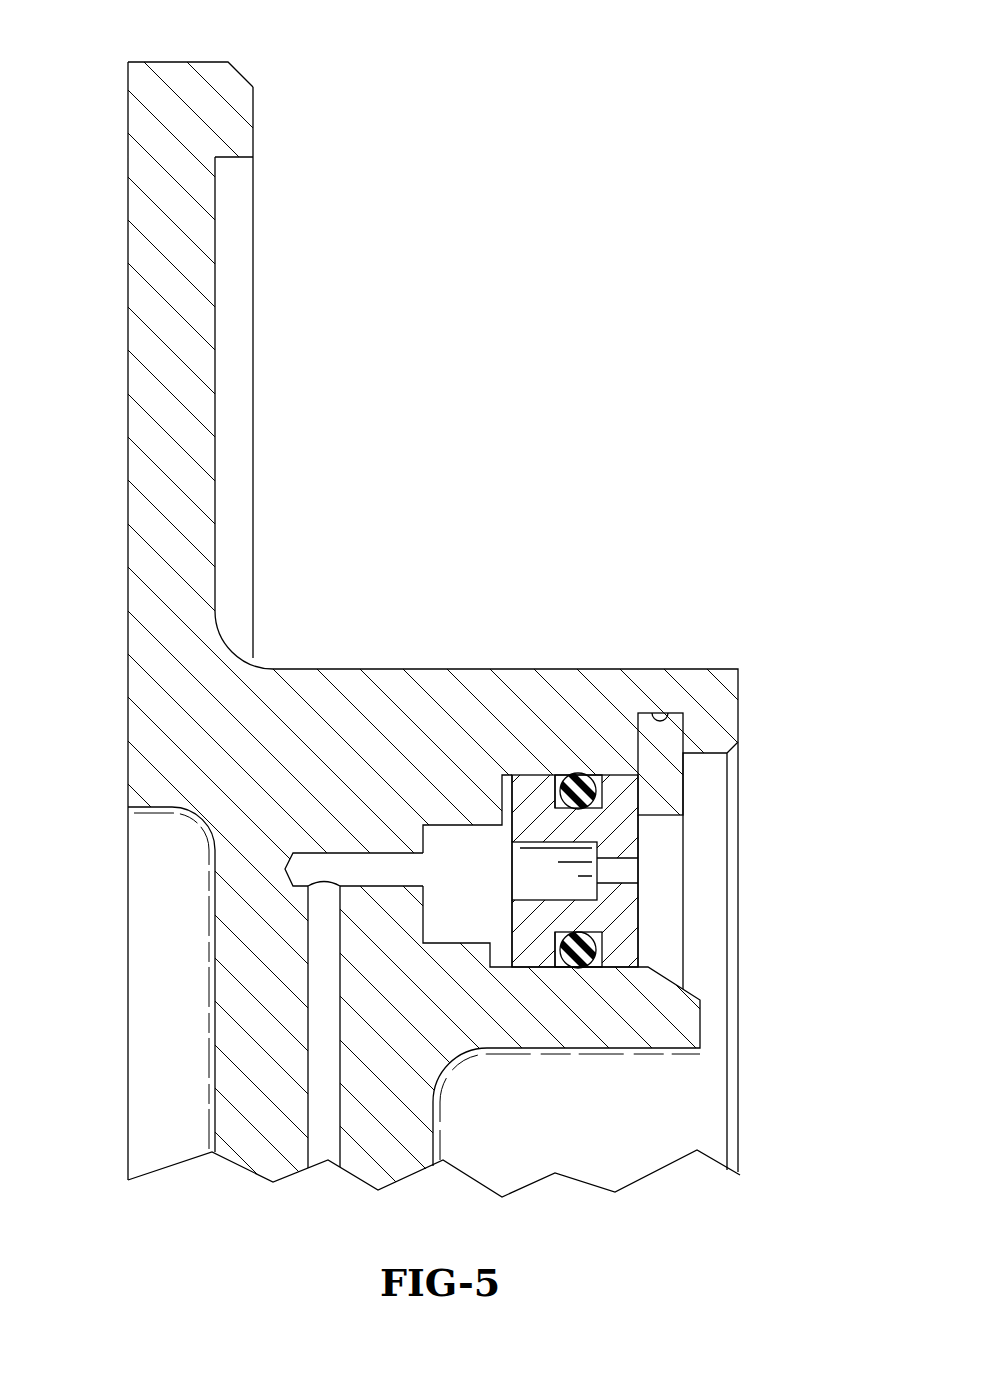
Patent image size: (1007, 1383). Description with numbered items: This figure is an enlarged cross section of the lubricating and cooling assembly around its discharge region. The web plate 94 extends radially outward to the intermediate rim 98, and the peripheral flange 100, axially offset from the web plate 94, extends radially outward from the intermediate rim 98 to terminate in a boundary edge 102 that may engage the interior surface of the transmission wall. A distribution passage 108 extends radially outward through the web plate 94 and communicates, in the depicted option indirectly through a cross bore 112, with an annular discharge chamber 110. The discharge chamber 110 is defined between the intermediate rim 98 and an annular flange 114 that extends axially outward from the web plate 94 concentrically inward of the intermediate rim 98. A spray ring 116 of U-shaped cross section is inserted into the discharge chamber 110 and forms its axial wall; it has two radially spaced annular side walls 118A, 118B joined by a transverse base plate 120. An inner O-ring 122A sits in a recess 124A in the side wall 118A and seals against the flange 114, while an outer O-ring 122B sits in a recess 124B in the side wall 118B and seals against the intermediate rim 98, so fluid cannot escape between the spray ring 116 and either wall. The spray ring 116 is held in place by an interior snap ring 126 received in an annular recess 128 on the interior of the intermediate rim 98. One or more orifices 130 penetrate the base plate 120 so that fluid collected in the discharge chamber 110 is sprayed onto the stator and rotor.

The web plate 94 is at (245, 1127).
The intermediate rim 98 is at (468, 682).
The peripheral flange 100 is at (157, 322).
The boundary edge 102 is at (202, 60).
The distribution passage 108 is at (318, 1085).
The discharge chamber 110 is at (490, 894).
The cross bore 112 is at (322, 866).
The annular flange 114 is at (666, 1037).
The spray ring 116 is at (603, 913).
The side wall 118A is at (535, 932).
The side wall 118B is at (528, 808).
The transverse base plate 120 is at (625, 848).
The inner O-ring 122A is at (580, 960).
The outer O-ring 122B is at (580, 777).
The recess 124A is at (602, 937).
The recess 124B is at (602, 775).
The interior snap ring 126 is at (667, 762).
The annular recess 128 is at (665, 717).
The orifice 130 is at (623, 873).